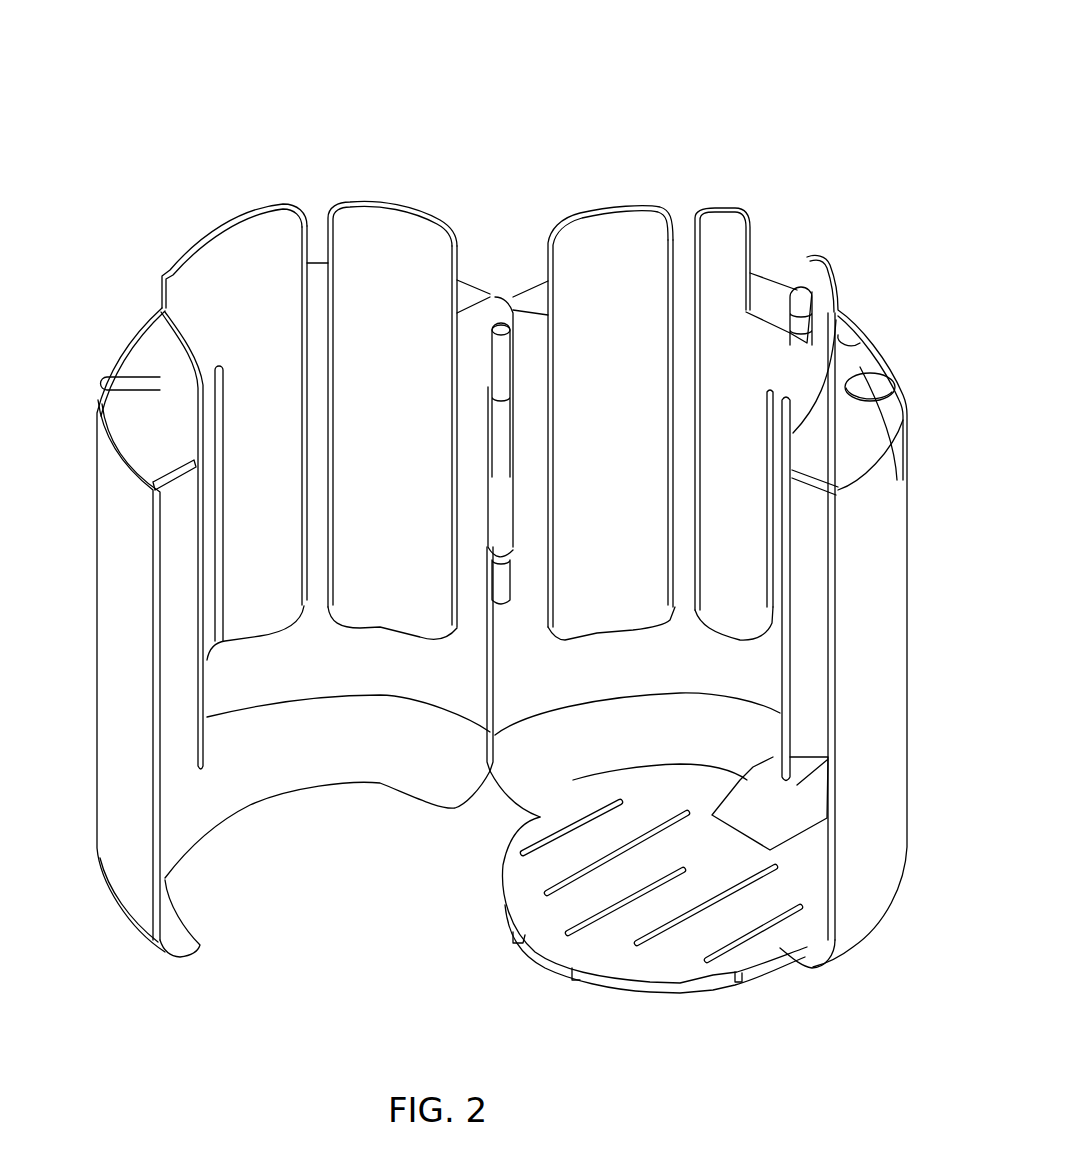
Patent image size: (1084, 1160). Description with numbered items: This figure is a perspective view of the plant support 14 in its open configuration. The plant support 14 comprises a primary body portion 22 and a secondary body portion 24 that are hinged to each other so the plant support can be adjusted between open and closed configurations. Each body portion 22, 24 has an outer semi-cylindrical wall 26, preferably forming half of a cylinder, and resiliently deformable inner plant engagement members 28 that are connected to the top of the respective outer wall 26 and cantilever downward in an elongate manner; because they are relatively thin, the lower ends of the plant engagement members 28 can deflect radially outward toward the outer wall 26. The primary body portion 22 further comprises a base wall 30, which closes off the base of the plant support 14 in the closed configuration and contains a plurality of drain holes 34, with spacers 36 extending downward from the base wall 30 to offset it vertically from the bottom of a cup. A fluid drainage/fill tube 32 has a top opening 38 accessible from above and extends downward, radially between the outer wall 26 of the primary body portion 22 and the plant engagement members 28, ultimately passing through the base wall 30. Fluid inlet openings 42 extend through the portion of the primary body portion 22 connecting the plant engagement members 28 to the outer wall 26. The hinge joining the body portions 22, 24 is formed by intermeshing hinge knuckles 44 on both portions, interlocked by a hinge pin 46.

The plant support 14 is at (699, 63).
The primary body portion 22 is at (888, 587).
The secondary body portion 24 is at (112, 783).
The outer semi-cylindrical wall 26 is at (112, 655).
The plant engagement members 28 is at (617, 237).
The base wall 30 is at (518, 880).
The fluid drainage/fill tube 32 is at (780, 815).
The drain holes 34 is at (575, 915).
The spacers 36 is at (515, 930).
The top opening 38 is at (802, 290).
The fluid inlet openings 42 is at (867, 383).
The hinge knuckles 44 is at (497, 433).
The hinge pin 46 is at (500, 322).